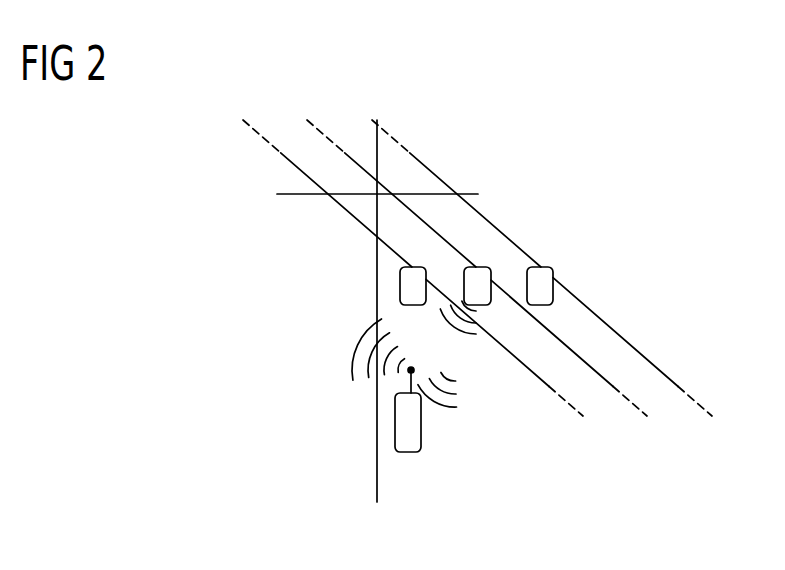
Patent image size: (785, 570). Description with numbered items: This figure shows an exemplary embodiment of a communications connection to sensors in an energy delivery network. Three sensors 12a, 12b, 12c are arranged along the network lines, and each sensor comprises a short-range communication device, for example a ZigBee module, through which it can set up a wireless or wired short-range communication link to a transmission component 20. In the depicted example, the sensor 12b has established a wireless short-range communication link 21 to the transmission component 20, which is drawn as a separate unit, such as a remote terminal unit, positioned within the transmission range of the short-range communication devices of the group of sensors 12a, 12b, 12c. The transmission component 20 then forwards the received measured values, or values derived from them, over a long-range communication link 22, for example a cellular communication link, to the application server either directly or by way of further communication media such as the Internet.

The sensor 12a is at (400, 283).
The sensor 12b is at (483, 267).
The sensor 12c is at (553, 299).
The transmission component 20 is at (412, 452).
The wireless short-range communication link 21 is at (471, 369).
The long-range communication link 22 is at (314, 359).